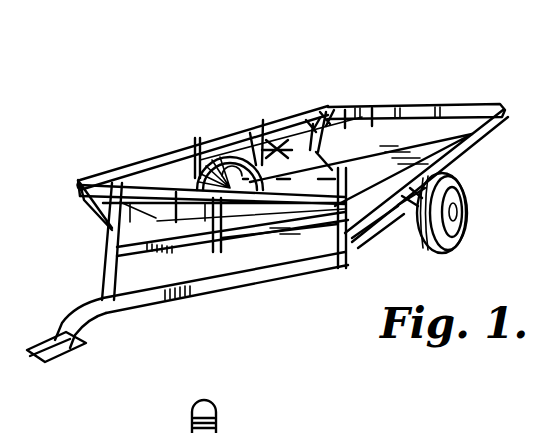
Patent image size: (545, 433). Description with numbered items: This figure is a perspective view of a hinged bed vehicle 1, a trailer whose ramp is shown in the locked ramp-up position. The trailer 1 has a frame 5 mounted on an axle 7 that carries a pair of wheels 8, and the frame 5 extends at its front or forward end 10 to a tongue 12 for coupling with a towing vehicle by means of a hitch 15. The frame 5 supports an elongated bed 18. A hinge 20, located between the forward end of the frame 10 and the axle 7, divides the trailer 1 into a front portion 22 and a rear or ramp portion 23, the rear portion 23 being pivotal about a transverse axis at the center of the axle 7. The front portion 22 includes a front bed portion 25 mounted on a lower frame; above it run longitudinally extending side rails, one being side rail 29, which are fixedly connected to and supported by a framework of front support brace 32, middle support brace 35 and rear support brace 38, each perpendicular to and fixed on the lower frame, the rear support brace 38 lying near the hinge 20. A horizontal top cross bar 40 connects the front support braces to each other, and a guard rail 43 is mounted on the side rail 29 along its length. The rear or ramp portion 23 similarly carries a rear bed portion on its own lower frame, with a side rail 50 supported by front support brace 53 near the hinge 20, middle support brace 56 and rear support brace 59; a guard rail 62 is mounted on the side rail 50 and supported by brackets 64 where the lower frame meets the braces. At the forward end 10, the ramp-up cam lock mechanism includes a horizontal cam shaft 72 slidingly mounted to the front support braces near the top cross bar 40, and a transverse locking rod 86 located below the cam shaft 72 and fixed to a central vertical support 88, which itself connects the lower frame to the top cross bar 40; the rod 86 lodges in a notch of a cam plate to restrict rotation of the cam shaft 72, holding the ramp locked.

The hinged bed vehicle 1 is at (218, 66).
The frame 5 is at (341, 262).
The axle 7 is at (413, 207).
The wheels 8 is at (470, 208).
The front or forward end 10 is at (178, 256).
The tongue 12 is at (223, 292).
The hitch 15 is at (66, 347).
The elongated bed 18 is at (361, 158).
The hinge 20 is at (311, 157).
The front portion 22 is at (153, 106).
The rear or ramp portion 23 is at (305, 80).
The front bed portion 25 is at (266, 175).
The side rail 29 is at (153, 176).
The front support brace 32 is at (108, 228).
The middle support brace 35 is at (196, 170).
The rear support brace 38 is at (242, 152).
The horizontal top cross bar 40 is at (313, 175).
The guard rail 43 is at (106, 178).
The side rail 50 is at (326, 112).
The front support brace 53 is at (263, 120).
The middle support brace 56 is at (313, 124).
The rear support brace 59 is at (370, 109).
The guard rail 62 is at (250, 133).
The brackets 64 is at (281, 152).
The horizontal cam shaft 72 is at (157, 207).
The transverse locking rod 86 is at (358, 235).
The central vertical support 88 is at (223, 238).